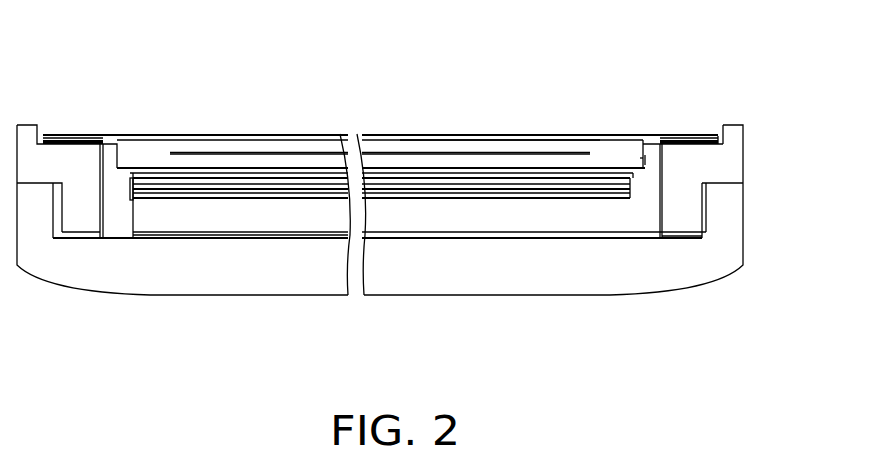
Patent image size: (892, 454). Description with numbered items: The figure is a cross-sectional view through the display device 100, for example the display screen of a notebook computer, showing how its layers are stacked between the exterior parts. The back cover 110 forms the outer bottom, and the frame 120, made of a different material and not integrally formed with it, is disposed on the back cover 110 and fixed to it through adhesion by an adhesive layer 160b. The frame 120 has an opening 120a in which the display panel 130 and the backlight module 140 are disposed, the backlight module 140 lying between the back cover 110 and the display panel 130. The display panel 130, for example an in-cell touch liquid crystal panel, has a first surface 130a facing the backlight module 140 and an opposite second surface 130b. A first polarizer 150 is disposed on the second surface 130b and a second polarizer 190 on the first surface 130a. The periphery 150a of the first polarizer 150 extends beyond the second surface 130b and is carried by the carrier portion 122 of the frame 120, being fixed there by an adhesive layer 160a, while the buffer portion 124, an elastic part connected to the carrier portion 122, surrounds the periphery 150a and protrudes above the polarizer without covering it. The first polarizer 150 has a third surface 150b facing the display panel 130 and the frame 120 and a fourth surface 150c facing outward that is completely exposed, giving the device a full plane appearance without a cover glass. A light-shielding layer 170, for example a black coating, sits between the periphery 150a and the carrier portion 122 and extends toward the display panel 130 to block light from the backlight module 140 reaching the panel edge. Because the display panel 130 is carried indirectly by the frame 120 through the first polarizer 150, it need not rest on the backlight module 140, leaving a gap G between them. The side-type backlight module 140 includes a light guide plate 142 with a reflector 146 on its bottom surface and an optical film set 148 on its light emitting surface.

The display device 100 is at (825, 396).
The back cover 110 is at (547, 270).
The frame 120 is at (453, 180).
The carrier portion 122 is at (713, 165).
The buffer portion 124 is at (733, 137).
The opening 120a is at (640, 158).
The display panel 130 is at (385, 192).
The first surface 130a is at (505, 178).
The second surface 130b is at (548, 130).
The backlight module 140 is at (652, 187).
The light guide plate 142 is at (187, 217).
The reflector 146 is at (245, 235).
The optical film set 148 is at (130, 192).
The first polarizer 150 is at (380, 210).
The periphery 150a is at (103, 129).
The third surface 150b is at (388, 148).
The fourth surface 150c is at (409, 125).
The adhesive layer 160a is at (650, 159).
The adhesive layer 160b is at (677, 238).
The light-shielding layer 170 is at (713, 132).
The second polarizer 190 is at (297, 168).
The gap G is at (618, 175).